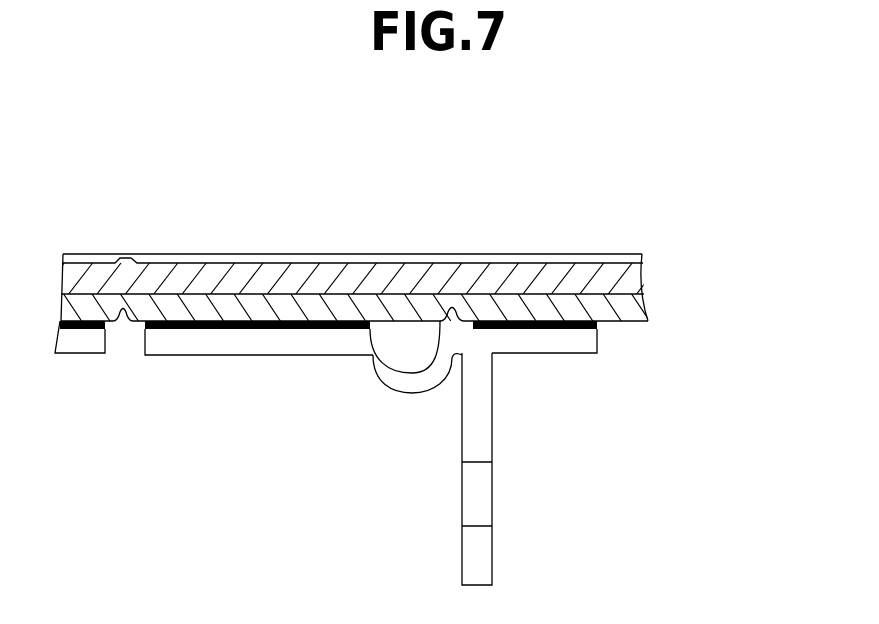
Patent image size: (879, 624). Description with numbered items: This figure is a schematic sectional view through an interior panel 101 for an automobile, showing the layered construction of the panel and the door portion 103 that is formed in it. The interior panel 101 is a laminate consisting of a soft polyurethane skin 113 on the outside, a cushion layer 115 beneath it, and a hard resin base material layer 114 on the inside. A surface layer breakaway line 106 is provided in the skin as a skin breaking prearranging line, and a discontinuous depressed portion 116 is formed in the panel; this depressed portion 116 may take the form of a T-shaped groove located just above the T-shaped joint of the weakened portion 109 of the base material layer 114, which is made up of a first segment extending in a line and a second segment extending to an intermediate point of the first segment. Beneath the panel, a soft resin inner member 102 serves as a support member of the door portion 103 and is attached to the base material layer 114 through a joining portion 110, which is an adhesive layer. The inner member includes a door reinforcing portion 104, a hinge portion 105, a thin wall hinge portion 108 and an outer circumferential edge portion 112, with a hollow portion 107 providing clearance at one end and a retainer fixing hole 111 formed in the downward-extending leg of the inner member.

The interior panel 101 is at (431, 238).
The soft resin inner member 102 is at (584, 457).
The door portion 103 is at (322, 254).
The door reinforcing portion 104 is at (253, 357).
The hinge portion 105 is at (408, 395).
The surface layer breakaway line 106 is at (352, 201).
The hollow portion 107 is at (122, 345).
The thin wall hinge portion 108 is at (451, 304).
The weakened portion of base material layer 109 is at (124, 300).
The joining portion 110 is at (548, 320).
The retainer fixing hole 111 is at (492, 497).
The outer circumferential edge portion 112 is at (537, 345).
The soft polyurethane skin 113 is at (646, 256).
The hard resin base material layer 114 is at (390, 247).
The cushion layer 115 is at (393, 220).
The discontinuous depressed portion 116 is at (121, 256).